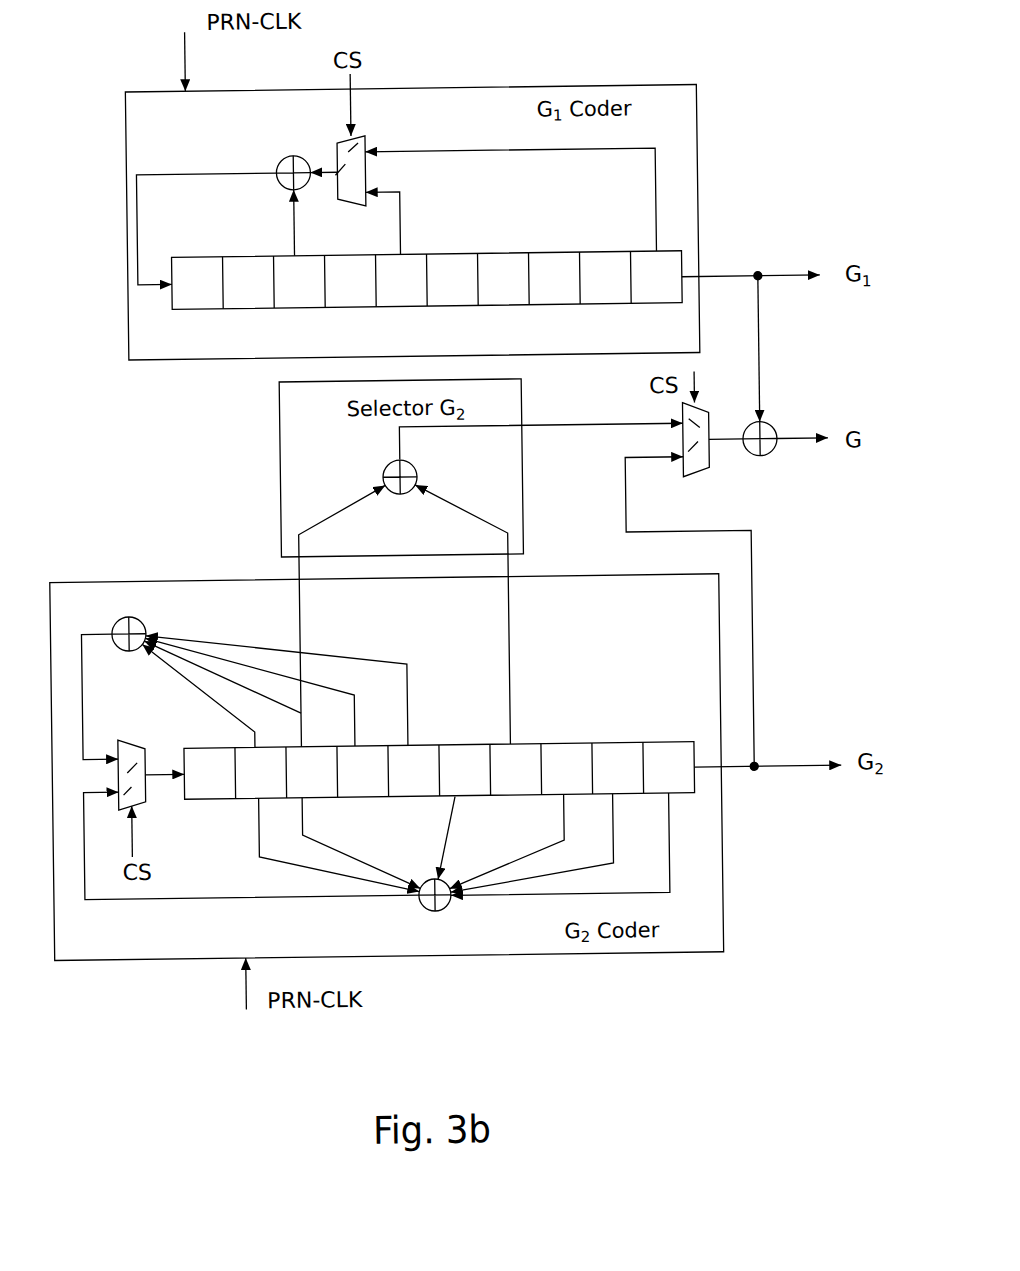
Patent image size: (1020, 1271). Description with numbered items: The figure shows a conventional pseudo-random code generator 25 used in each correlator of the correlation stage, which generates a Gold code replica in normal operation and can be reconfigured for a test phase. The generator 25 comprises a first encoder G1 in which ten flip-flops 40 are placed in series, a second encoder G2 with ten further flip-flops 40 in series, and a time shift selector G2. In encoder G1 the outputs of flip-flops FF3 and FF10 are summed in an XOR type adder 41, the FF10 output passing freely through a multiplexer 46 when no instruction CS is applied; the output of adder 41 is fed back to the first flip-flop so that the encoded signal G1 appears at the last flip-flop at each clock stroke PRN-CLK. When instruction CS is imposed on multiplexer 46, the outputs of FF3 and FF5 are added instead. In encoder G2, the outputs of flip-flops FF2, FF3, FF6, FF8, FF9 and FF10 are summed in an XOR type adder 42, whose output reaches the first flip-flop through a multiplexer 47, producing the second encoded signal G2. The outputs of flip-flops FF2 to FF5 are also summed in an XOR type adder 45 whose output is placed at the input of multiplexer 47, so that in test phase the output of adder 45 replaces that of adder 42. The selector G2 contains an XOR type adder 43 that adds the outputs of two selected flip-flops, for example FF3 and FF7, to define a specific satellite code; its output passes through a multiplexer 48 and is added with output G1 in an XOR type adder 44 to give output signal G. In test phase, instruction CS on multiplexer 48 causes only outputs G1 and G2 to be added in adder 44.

The pseudo-random code generator 25 is at (93, 304).
The flip-flops 40 is at (345, 306).
The XOR type adder 41 is at (298, 153).
The XOR type adder 42 is at (430, 912).
The XOR type adder 43 is at (384, 466).
The XOR type adder 44 is at (762, 461).
The XOR type adder 45 is at (127, 612).
The multiplexer 46 is at (372, 135).
The multiplexer 47 is at (115, 772).
The multiplexer 48 is at (691, 468).